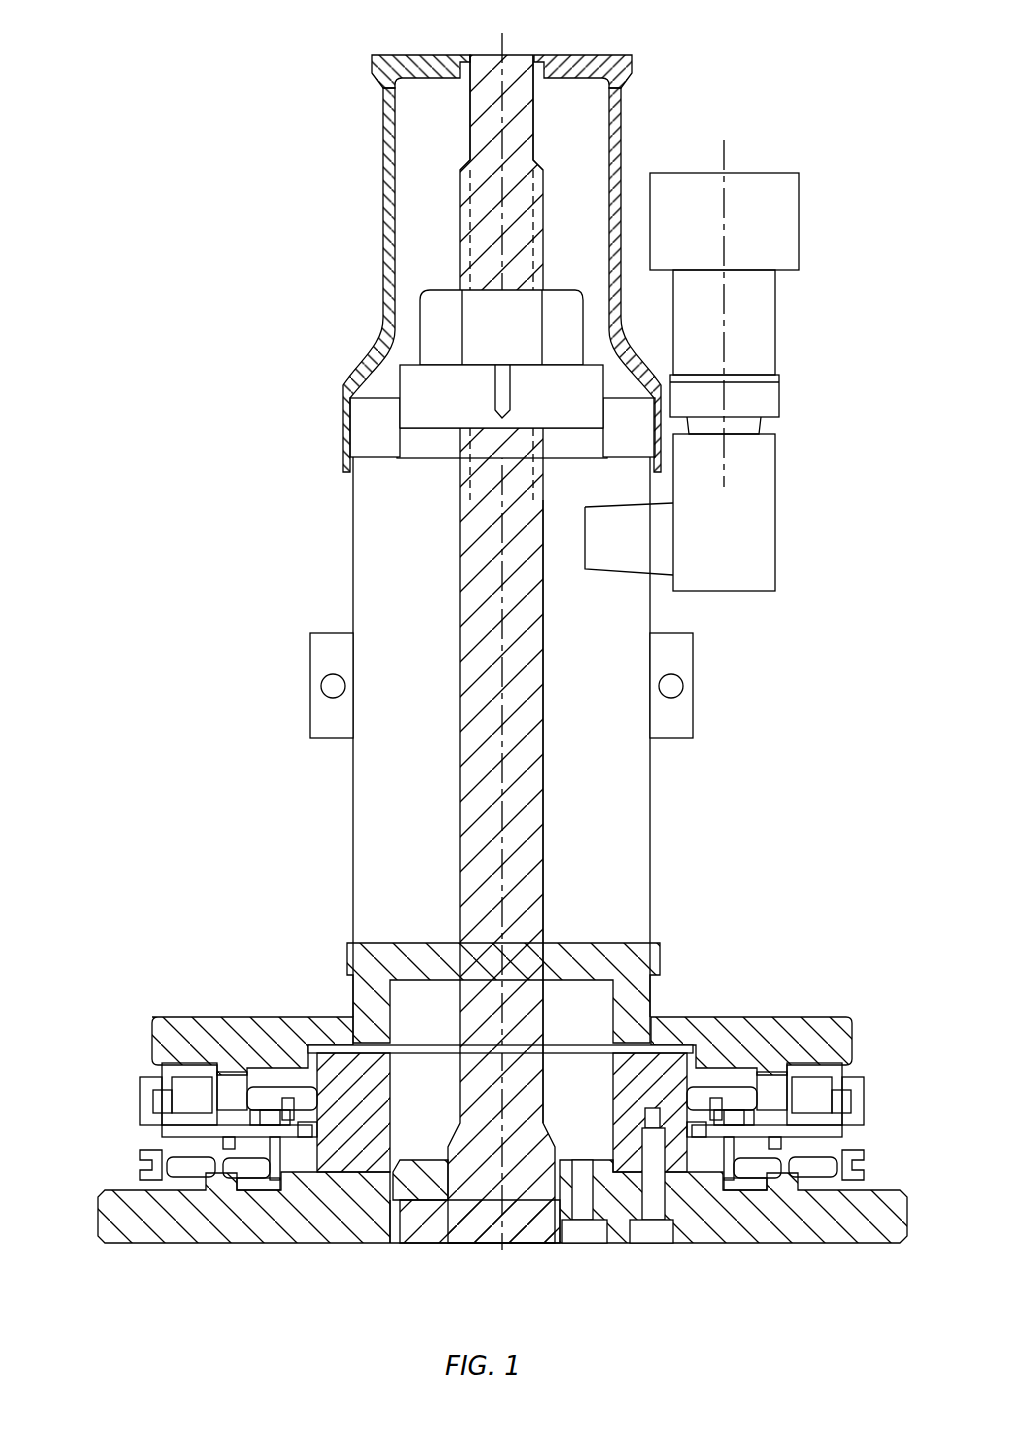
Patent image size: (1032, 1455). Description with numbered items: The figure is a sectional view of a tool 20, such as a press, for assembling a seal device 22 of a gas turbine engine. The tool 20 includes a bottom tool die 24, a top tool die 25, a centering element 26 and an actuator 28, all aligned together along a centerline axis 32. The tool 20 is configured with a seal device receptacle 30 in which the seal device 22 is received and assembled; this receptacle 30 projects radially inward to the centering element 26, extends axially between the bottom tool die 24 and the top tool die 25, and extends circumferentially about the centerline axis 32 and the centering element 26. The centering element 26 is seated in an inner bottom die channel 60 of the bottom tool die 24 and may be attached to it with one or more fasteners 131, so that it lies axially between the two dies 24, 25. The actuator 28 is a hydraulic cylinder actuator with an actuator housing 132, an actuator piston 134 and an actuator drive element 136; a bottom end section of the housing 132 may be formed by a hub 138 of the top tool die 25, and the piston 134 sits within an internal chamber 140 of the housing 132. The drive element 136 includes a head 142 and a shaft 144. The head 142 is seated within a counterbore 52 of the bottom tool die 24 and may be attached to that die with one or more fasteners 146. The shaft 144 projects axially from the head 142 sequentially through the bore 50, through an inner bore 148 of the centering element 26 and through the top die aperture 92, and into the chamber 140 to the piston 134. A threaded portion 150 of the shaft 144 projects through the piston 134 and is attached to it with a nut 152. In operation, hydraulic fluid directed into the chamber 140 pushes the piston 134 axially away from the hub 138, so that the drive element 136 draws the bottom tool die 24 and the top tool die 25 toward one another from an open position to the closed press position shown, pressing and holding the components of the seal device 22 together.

The tool 20 is at (263, 112).
The seal device 22 is at (120, 1113).
The bottom tool die 24 is at (95, 1238).
The top tool die 25 is at (142, 1025).
The centering element 26 is at (662, 1047).
The actuator 28 is at (343, 348).
The seal device receptacle 30 is at (735, 1088).
The centerline axis 32 is at (506, 40).
The bore 50 is at (445, 1170).
The counterbore 52 is at (388, 1242).
The inner bottom die channel 60 is at (618, 1165).
The top die aperture 92 is at (592, 1000).
The fasteners 131 is at (660, 1246).
The actuator housing 132 is at (350, 540).
The actuator piston 134 is at (395, 418).
The actuator drive element 136 is at (550, 825).
The hub 138 is at (342, 957).
The internal chamber 140 is at (407, 728).
The head 142 is at (430, 1246).
The shaft 144 is at (550, 878).
The fasteners 146 is at (584, 1246).
The inner bore 148 is at (604, 1196).
The threaded portion 150 is at (547, 212).
The nut 152 is at (556, 288).